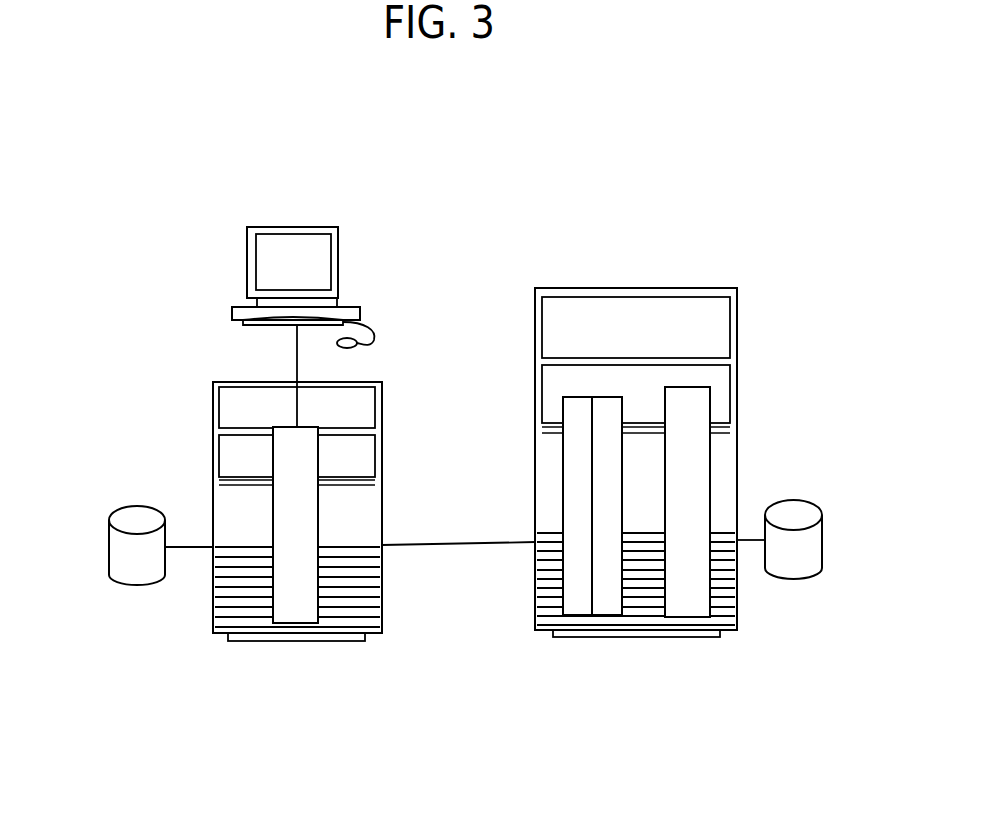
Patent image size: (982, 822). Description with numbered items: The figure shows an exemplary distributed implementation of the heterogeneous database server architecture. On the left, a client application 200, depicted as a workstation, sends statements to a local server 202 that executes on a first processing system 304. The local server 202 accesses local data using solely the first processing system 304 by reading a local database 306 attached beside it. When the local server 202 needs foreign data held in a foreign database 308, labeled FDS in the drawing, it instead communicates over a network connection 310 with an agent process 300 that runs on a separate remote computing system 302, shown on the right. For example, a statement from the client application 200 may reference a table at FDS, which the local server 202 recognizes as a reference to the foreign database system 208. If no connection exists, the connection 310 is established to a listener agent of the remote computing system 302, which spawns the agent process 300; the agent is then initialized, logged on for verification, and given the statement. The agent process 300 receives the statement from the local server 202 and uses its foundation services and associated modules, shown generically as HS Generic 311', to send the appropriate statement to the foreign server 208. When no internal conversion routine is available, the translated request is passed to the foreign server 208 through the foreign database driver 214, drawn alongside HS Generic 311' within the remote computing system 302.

The client application 200 is at (329, 247).
The local server 202 is at (282, 448).
The foreign database system 208 is at (703, 410).
The foreign database driver 214 is at (605, 615).
The agent process 300 is at (622, 393).
The remote computing system 302 is at (573, 643).
The first processing system 304 is at (222, 644).
The local database 306 is at (113, 556).
The foreign database 308 is at (822, 548).
The network connection 310 is at (476, 546).
The HS Generic 311' is at (527, 504).